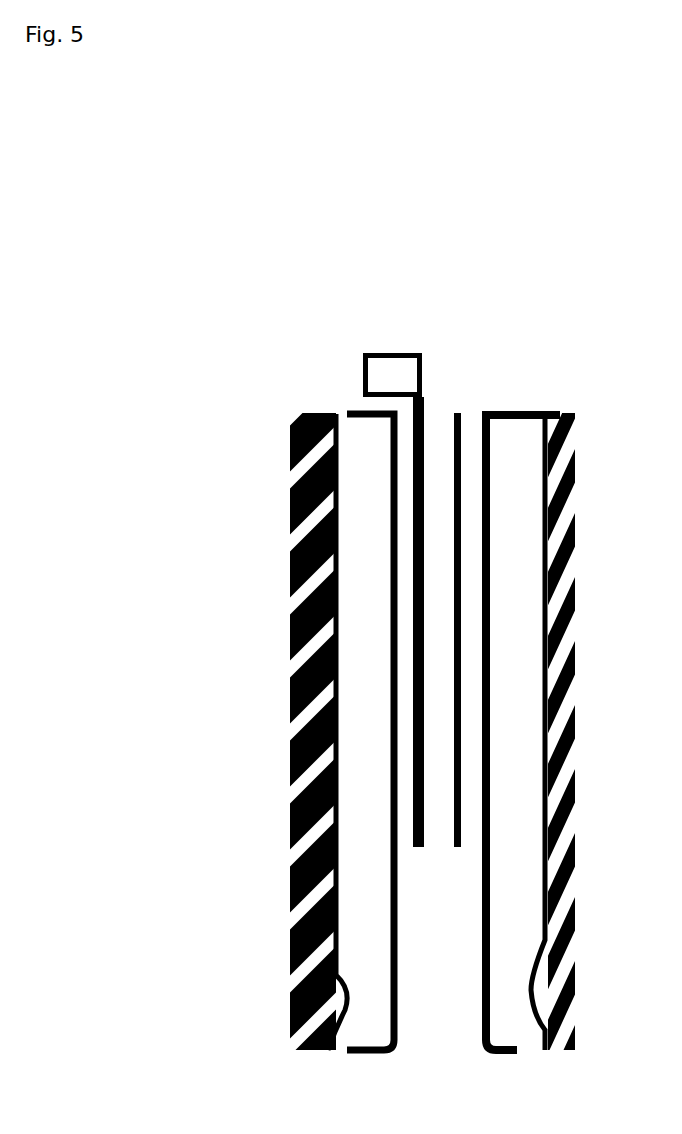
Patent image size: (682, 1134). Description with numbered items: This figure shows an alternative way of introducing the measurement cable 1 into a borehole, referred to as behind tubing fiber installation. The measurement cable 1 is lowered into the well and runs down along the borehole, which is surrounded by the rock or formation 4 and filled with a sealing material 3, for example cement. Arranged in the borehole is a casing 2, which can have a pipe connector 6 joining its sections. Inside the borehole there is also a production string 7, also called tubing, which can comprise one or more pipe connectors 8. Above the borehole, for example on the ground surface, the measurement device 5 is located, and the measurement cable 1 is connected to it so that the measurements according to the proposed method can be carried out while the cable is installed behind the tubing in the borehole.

The measurement cable 1 is at (413, 640).
The casing 2 is at (390, 514).
The sealing material 3 is at (357, 695).
The formation 4 is at (293, 725).
The measurement device 5 is at (363, 353).
The pipe connector 6 is at (386, 862).
The production string 7 is at (496, 416).
The pipe connector 8 is at (457, 462).